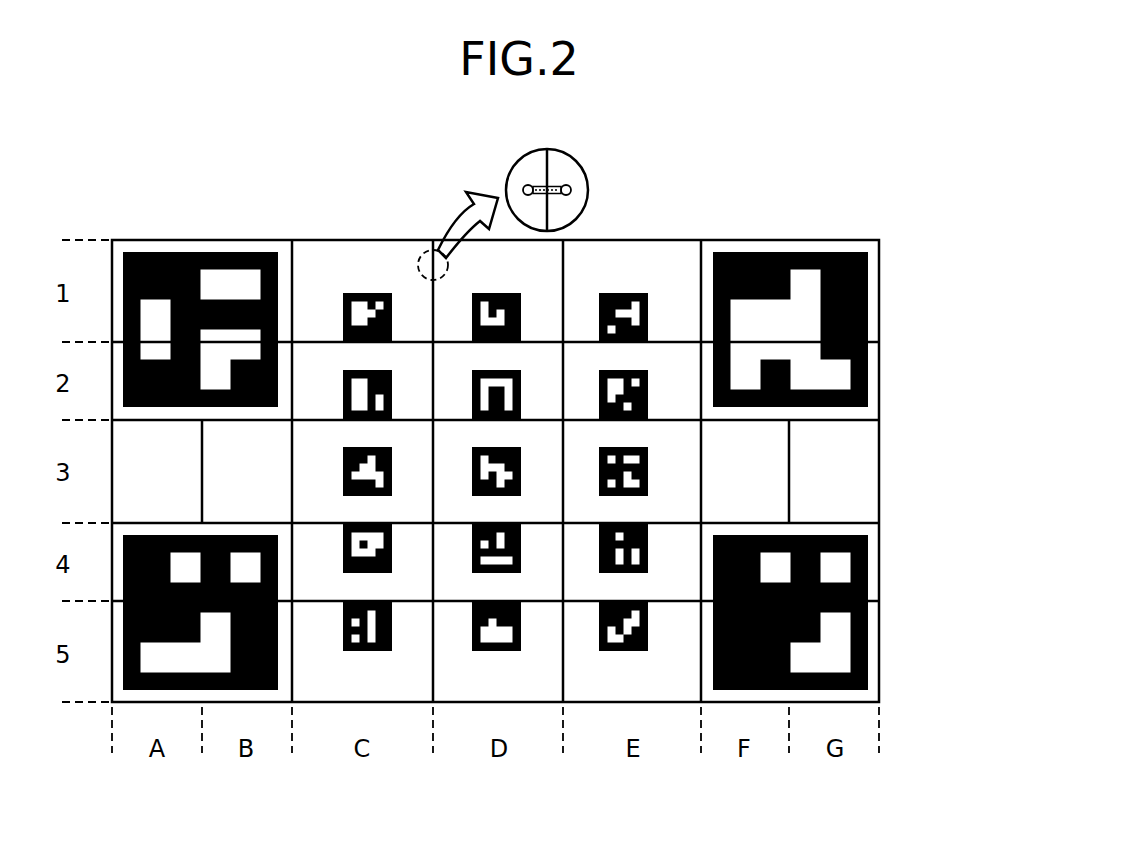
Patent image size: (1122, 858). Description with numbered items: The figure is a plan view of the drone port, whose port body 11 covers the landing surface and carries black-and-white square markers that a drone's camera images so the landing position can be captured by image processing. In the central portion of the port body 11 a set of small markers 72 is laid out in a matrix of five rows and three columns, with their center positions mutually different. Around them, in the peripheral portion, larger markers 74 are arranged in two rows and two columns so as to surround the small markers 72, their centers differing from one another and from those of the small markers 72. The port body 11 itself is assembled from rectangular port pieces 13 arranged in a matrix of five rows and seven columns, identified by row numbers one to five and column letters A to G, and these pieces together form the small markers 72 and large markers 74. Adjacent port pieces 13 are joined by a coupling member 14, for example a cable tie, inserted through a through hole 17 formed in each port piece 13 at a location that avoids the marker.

The port body 11 is at (658, 232).
The port piece 13 is at (428, 252).
The coupling member 14 is at (536, 190).
The through hole 17 is at (568, 196).
The small marker 72 is at (648, 393).
The large marker 74 is at (880, 331).